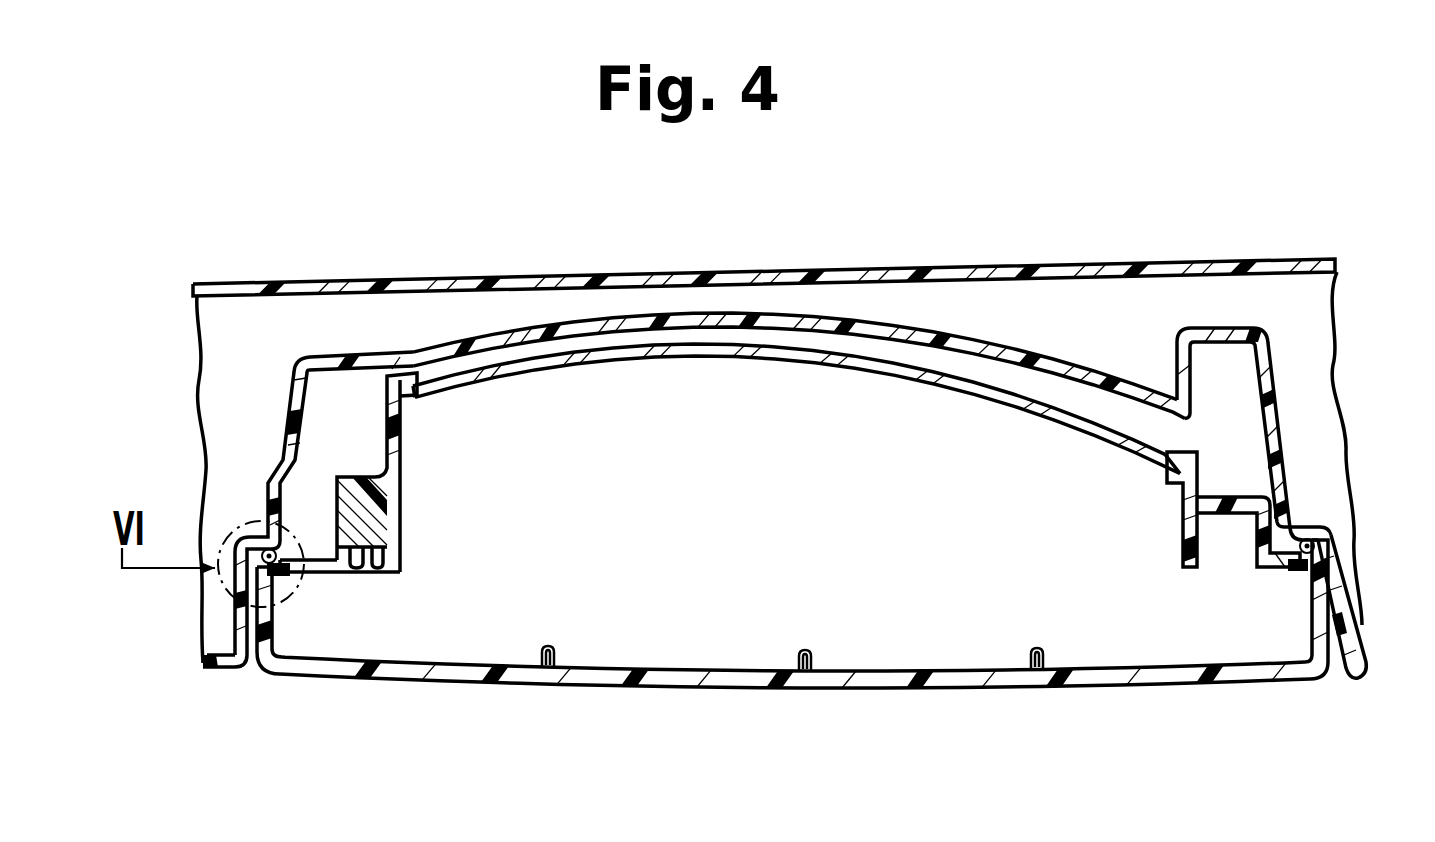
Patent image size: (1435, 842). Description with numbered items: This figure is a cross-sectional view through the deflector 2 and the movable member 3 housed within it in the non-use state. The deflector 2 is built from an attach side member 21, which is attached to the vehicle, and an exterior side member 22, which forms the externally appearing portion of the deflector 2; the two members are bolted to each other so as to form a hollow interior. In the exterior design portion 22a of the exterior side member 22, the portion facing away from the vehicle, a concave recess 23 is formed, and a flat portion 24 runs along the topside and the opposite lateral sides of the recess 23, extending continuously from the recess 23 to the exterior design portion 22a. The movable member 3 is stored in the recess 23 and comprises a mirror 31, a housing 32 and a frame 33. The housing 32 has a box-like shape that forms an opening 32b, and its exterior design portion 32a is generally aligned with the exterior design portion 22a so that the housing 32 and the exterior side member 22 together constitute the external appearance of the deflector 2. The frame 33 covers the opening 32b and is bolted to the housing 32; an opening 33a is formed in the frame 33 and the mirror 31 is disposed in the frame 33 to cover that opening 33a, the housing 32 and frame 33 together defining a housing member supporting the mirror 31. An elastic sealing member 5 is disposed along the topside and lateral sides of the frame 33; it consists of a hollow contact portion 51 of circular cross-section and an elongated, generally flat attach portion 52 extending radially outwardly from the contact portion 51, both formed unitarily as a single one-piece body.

The deflector 2 is at (1222, 253).
The attach side member 21 is at (860, 270).
The exterior side member 22 is at (273, 410).
The exterior design portion 22a is at (230, 668).
The recess 23 is at (637, 333).
The flat portion 24 is at (265, 545).
The movable member 3 is at (792, 680).
The mirror 31 is at (900, 370).
The housing 32 is at (433, 682).
The exterior design portion 32a is at (733, 675).
The opening 32b is at (300, 566).
The frame 33 is at (380, 436).
The opening 33a is at (413, 378).
The elastic sealing member 5 is at (1320, 553).
The contact portion 51 is at (1312, 528).
The attach portion 52 is at (1307, 568).